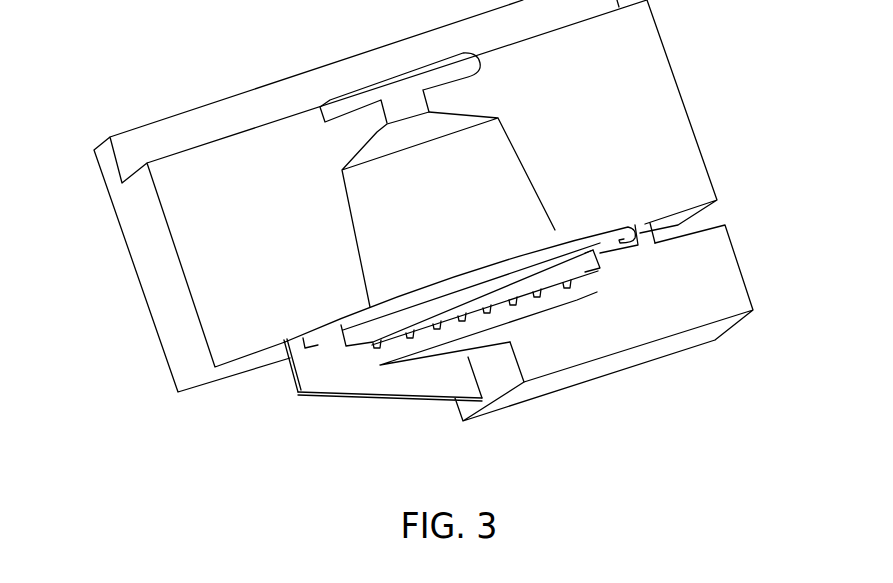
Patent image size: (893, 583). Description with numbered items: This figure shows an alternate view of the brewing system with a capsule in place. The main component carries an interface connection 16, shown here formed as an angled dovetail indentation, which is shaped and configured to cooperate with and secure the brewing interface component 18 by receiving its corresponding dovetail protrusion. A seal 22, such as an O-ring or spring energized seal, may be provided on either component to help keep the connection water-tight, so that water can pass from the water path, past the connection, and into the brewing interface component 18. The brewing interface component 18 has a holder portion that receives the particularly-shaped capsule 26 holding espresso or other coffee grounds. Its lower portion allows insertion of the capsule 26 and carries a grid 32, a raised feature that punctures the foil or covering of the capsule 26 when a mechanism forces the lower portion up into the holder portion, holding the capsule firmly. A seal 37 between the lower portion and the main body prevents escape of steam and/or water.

The interface connection 16 is at (157, 140).
The brewing interface component 18 is at (97, 262).
The seal 22 is at (360, 99).
The capsule 26 is at (500, 173).
The grid 32 is at (585, 275).
The seal 37 is at (313, 345).